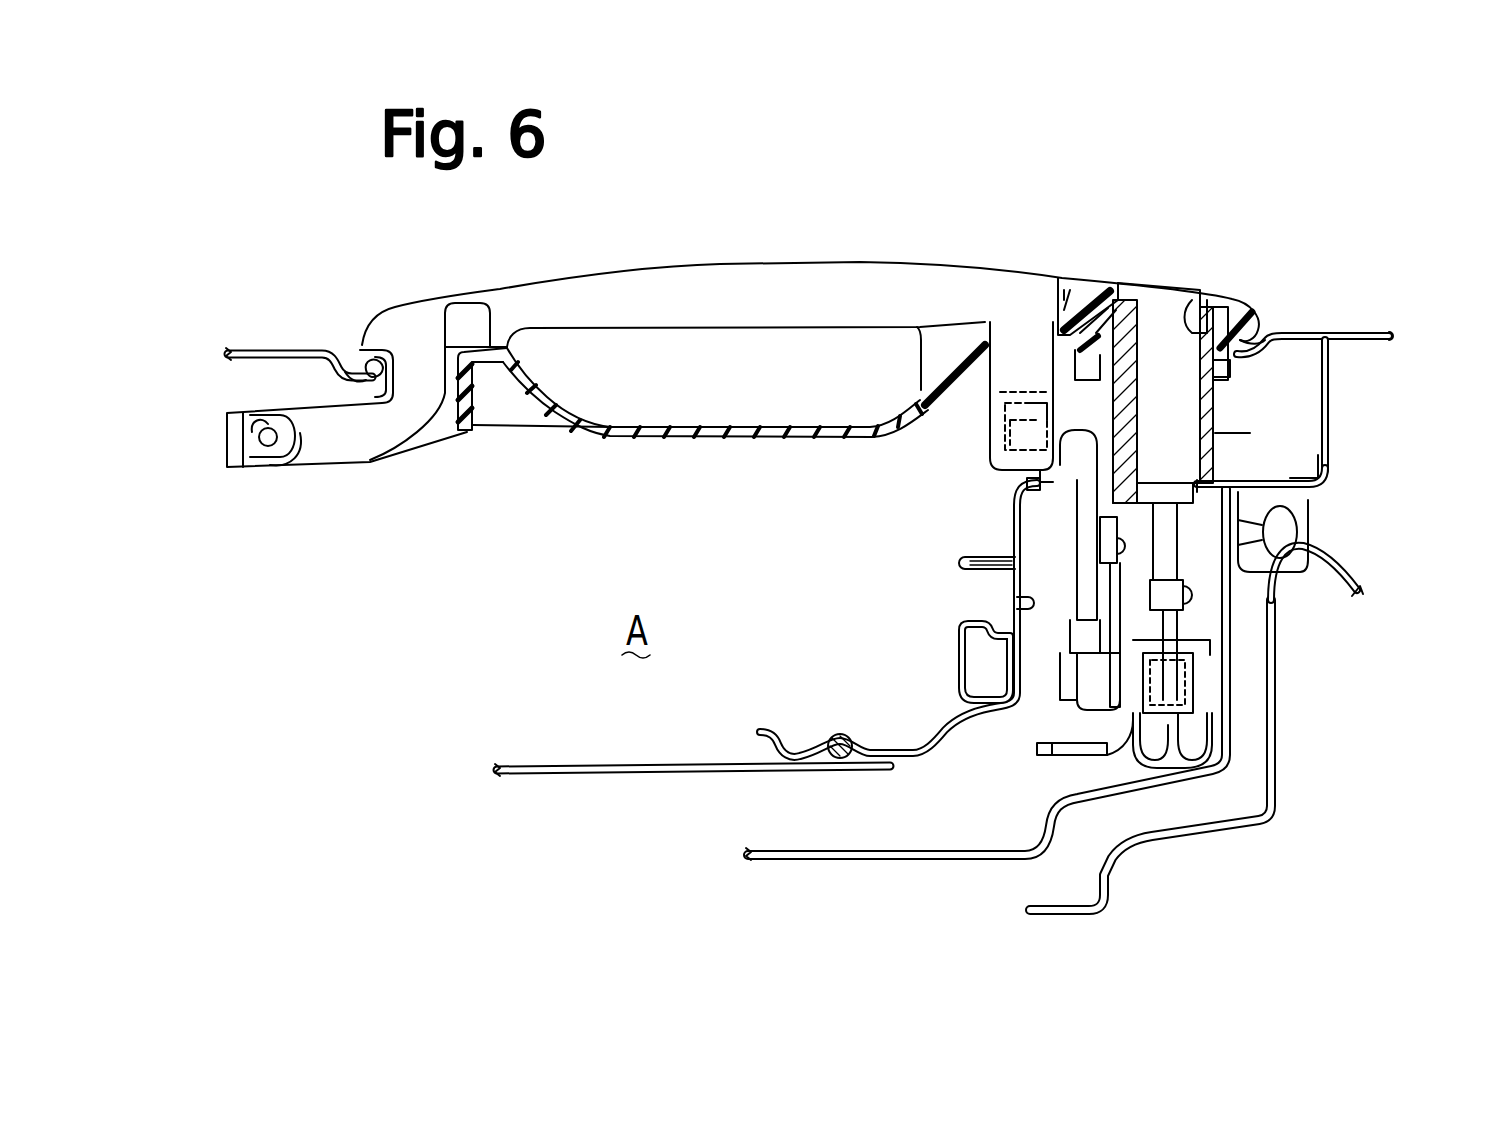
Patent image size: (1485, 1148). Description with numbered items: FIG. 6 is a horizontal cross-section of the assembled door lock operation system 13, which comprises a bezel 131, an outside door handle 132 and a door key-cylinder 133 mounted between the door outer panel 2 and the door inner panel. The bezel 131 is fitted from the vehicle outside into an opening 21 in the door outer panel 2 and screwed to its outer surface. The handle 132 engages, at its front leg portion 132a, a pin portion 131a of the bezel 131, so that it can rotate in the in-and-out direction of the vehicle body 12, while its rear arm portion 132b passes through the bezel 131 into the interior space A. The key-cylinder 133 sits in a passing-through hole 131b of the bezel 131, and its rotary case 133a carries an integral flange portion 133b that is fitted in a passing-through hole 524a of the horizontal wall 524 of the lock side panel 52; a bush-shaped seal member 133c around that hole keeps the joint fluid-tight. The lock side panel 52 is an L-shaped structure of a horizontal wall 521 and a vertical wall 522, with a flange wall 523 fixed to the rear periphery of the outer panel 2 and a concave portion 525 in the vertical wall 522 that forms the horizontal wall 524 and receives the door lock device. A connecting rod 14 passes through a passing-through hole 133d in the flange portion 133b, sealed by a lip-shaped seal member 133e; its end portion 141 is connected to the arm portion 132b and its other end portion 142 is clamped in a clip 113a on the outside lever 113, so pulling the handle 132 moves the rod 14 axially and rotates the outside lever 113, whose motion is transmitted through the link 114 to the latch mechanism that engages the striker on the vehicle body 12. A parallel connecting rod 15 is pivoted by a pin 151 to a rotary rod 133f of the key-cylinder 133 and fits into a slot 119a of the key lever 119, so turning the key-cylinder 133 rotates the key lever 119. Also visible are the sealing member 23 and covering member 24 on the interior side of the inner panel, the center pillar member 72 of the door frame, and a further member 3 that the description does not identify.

The door outer panel 2 is at (284, 338).
The opening 21 is at (347, 375).
The door inner panel 3 is at (936, 872).
The vehicle body 12 is at (1275, 732).
The door lock operation system 13 is at (1052, 351).
The connecting rod 14 is at (1034, 692).
The connecting rod 15 is at (1246, 698).
The sealing member 23 is at (841, 760).
The covering member 24 is at (626, 774).
The lock side panel 52 is at (1100, 545).
The center pillar member 72 is at (963, 563).
The outside lever 113 is at (946, 664).
The clip 113a is at (1068, 634).
The link 114 is at (1098, 528).
The key lever 119 is at (1100, 752).
The slot 119a is at (1168, 691).
The bezel 131 is at (696, 456).
The pin portion 131a is at (269, 446).
The passing-through hole 131b is at (1196, 309).
The outside door handle 132 is at (702, 252).
The front leg portion 132a is at (352, 456).
The rear arm portion 132b is at (996, 460).
The door key-cylinder 133 is at (1168, 281).
The rotary case 133a is at (1068, 368).
The flange portion 133b is at (1038, 475).
The bush-shaped seal member 133c is at (1032, 482).
The passing-through hole 133d is at (1058, 385).
The lip-shaped seal member 133e is at (1180, 437).
The rotary rod 133f is at (1346, 582).
The end portion 141 is at (1003, 408).
The end portion 142 is at (1090, 698).
The pin 151 is at (1262, 561).
The horizontal wall 521 is at (920, 768).
The vertical wall 522 is at (1331, 399).
The flange wall 523 is at (1348, 331).
The horizontal wall 524 is at (1300, 489).
The passing-through hole 524a is at (1213, 457).
The concave portion 525 is at (1020, 603).